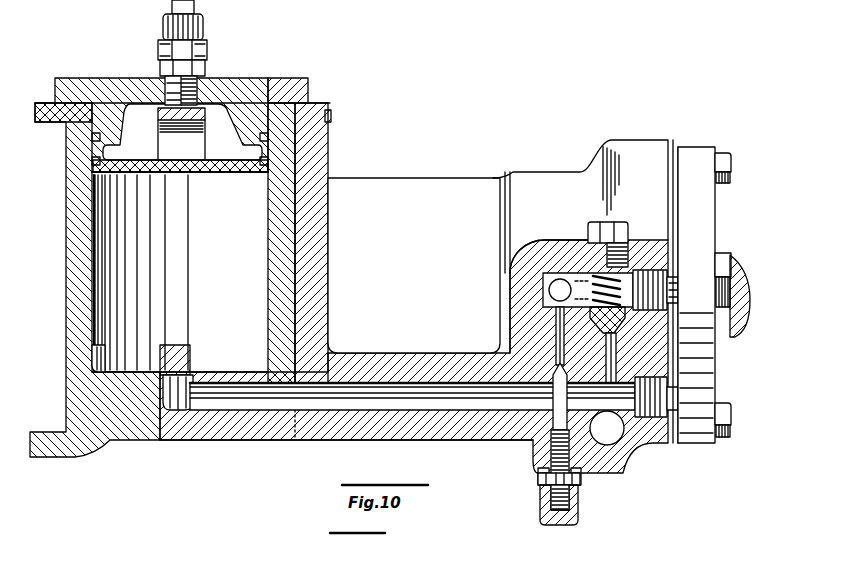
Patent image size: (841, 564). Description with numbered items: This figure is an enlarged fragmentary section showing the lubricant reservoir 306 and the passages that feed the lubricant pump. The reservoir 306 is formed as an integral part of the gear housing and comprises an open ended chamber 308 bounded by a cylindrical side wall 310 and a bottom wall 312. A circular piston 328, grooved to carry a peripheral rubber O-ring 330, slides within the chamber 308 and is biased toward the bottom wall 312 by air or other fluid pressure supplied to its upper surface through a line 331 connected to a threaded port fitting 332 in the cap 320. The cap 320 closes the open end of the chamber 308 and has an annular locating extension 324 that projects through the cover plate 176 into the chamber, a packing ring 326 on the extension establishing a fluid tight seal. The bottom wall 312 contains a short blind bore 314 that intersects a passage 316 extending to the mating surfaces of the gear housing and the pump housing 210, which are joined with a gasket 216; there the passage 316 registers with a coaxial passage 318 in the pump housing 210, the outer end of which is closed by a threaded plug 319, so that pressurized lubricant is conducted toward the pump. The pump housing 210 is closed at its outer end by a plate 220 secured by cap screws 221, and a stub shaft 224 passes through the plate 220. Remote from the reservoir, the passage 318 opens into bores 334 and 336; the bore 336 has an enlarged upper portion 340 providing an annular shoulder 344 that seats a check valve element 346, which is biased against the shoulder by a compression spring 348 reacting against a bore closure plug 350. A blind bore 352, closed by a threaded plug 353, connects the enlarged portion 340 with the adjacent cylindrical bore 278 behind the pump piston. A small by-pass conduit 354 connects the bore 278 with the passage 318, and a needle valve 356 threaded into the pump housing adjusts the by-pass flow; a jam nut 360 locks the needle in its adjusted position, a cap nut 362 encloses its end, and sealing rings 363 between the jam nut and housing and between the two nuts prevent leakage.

The cover plate 176 is at (50, 102).
The pump housing 210 is at (400, 192).
The gasket 216 is at (298, 440).
The plate 220 is at (700, 153).
The cap screws 221 is at (733, 160).
The stub shaft 224 is at (733, 263).
The cylindrical bore 278 is at (548, 287).
The lubricant reservoir 306 is at (67, 263).
The reservoir chamber 308 is at (178, 251).
The cylindrical side wall 310 is at (97, 283).
The bottom wall 312 is at (100, 368).
The blind bore 314 is at (160, 367).
The passage 316 is at (240, 405).
The coaxial passage 318 is at (360, 410).
The threaded plug 319 is at (674, 390).
The cap 320 is at (268, 88).
The annular locating extension 324 is at (252, 128).
The packing ring 326 is at (256, 136).
The piston 328 is at (205, 172).
The O-ring 330 is at (92, 164).
The line 331 is at (172, 5).
The threaded port fitting 332 is at (163, 68).
The bore 334 is at (612, 438).
The bore 336 is at (612, 357).
The enlarged upper portion 340 is at (589, 327).
The annular shoulder 344 is at (625, 322).
The check valve element 346 is at (604, 357).
The compression spring 348 is at (580, 265).
The bore closure plug 350 is at (613, 222).
The blind bore 352 is at (568, 272).
The threaded plug 353 is at (736, 272).
The by-pass conduit 354 is at (540, 343).
The needle valve 356 is at (558, 402).
The jam nut 360 is at (580, 480).
The cap nut 362 is at (580, 510).
The sealing rings 363 is at (548, 487).